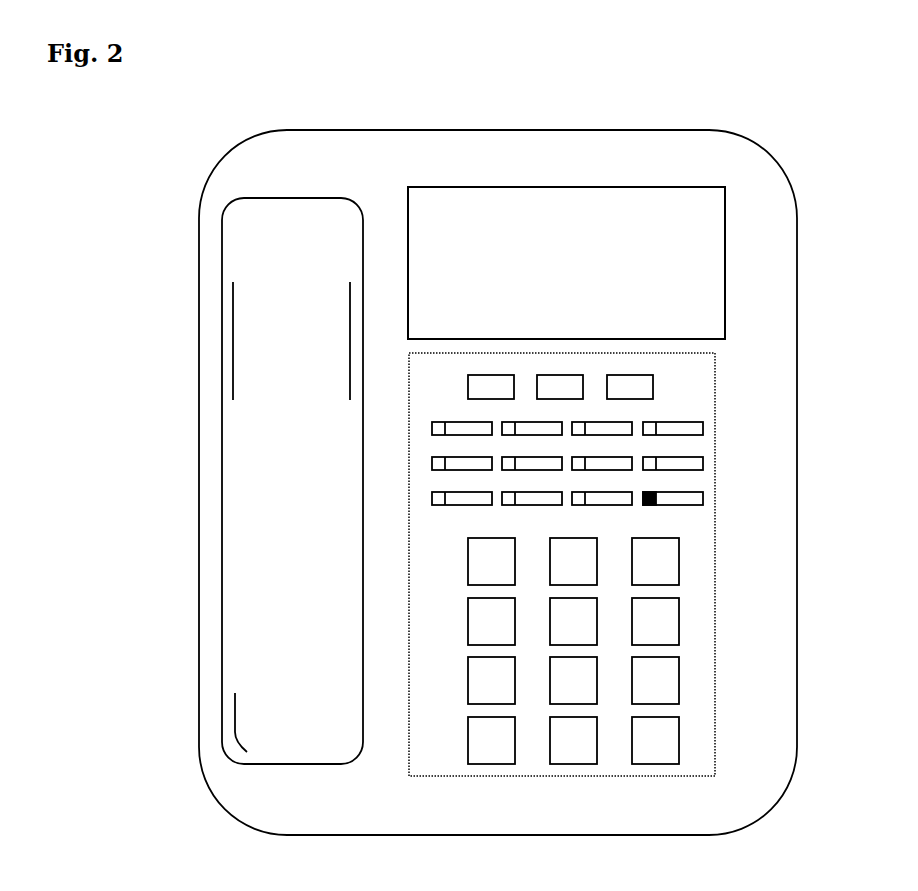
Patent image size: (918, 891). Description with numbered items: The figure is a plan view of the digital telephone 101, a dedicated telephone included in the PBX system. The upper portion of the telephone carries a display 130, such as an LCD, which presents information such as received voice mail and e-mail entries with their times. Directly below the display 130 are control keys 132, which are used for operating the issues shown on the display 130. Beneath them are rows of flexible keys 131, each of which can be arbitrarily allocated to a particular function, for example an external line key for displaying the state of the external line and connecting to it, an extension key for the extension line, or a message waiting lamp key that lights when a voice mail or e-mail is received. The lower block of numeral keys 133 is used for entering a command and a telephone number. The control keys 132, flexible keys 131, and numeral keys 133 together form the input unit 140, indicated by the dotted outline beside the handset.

The digital telephone 101 is at (565, 130).
The display 130 is at (726, 198).
The flexible keys 131 is at (703, 505).
The control keys 132 is at (655, 387).
The numeral keys 133 is at (680, 565).
The input unit 140 is at (715, 705).